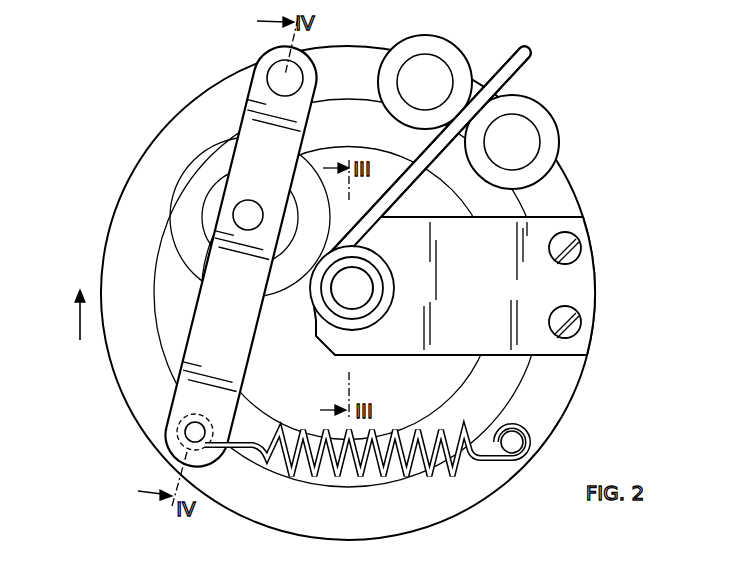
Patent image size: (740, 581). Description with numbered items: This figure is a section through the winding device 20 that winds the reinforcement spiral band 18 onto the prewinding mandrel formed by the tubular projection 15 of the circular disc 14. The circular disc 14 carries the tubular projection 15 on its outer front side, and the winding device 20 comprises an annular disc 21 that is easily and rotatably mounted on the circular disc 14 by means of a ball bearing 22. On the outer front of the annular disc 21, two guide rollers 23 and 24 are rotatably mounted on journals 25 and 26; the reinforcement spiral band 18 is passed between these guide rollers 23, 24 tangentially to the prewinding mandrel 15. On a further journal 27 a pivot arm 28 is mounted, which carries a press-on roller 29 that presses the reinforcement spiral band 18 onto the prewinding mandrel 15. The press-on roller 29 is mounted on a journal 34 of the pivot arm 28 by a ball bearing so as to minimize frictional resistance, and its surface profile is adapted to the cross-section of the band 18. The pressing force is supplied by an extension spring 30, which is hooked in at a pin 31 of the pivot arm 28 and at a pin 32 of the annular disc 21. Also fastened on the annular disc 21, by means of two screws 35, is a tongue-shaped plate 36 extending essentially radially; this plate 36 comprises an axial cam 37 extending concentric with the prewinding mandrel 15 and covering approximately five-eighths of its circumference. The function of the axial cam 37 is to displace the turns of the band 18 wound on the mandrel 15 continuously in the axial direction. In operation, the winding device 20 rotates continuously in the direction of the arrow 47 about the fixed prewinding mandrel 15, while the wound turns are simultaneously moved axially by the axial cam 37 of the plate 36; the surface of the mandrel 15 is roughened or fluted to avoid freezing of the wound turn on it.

The circular disc 14 is at (443, 372).
The tubular projection 15 is at (330, 298).
The reinforcement spiral band 18 is at (523, 47).
The winding device 20 is at (597, 166).
The annular disc 21 is at (565, 200).
The ball bearing 22 is at (513, 383).
The guide roller 23 is at (458, 72).
The guide roller 24 is at (545, 128).
The journal 25 is at (435, 70).
The journal 26 is at (522, 127).
The journal 27 is at (270, 77).
The pivot arm 28 is at (217, 258).
The press-on roller 29 is at (197, 157).
The extension spring 30 is at (288, 425).
The pin 31 is at (185, 432).
The pin 32 is at (516, 442).
The journal 34 is at (248, 200).
The screws 35 is at (575, 318).
The tongue-shaped plate 36 is at (408, 330).
The axial cam 37 is at (381, 270).
The arrow 47 is at (58, 315).